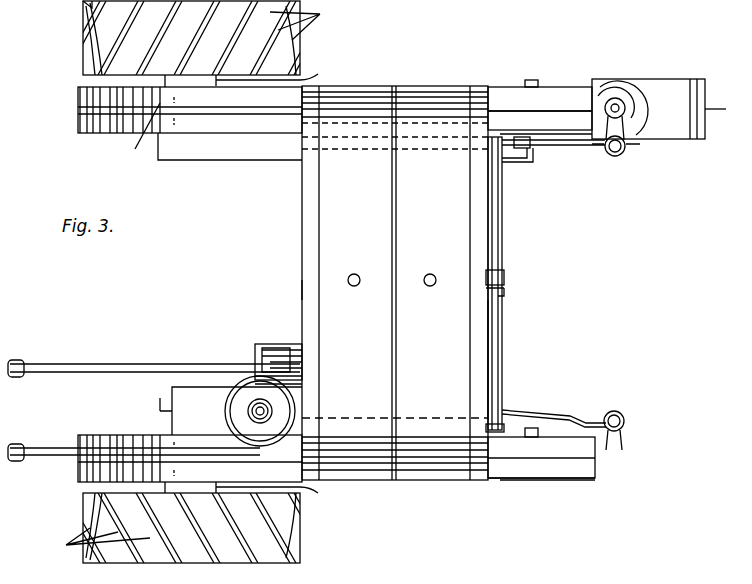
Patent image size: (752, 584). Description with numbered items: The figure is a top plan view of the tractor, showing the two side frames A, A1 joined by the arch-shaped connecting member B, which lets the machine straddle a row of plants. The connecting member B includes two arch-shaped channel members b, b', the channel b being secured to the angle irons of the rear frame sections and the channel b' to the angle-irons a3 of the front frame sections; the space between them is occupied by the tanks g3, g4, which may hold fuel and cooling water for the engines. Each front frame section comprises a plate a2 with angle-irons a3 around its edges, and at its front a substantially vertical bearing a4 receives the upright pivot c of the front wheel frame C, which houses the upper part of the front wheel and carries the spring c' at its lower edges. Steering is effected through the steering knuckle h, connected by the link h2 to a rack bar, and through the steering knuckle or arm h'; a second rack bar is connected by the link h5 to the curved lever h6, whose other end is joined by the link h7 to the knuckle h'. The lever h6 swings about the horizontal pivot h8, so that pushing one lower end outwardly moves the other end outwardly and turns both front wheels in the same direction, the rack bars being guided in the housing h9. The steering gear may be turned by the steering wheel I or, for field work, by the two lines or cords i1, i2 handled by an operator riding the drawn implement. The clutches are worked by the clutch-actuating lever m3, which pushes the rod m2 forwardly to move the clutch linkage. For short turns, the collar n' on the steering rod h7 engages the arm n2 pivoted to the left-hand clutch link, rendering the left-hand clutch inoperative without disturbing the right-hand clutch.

The arch-shaped connecting member B is at (382, 283).
The tank g3 is at (361, 249).
The tank g4 is at (433, 249).
The arch-shaped channel member b is at (287, 292).
The arch-shaped lever h6 is at (503, 240).
The pivot h8 is at (504, 276).
The arch-shaped channel member b' is at (509, 360).
The link h5 is at (498, 424).
The side frame A1 is at (505, 92).
The plate a2 is at (556, 108).
The front wheel frame C is at (648, 109).
The spring c' is at (723, 109).
The vertical bearing a4 is at (633, 98).
The upright pivot or shaft c is at (618, 79).
The steering knuckle or arm h' is at (636, 140).
The link h7 is at (587, 150).
The collar or projection n' is at (553, 158).
The arm n2 is at (520, 165).
The side frame A is at (490, 480).
The angle-irons a3 is at (517, 450).
The link h2 is at (541, 413).
The steering knuckle h is at (633, 422).
The steering line or cord i1 is at (44, 372).
The steering line or cord i2 is at (40, 450).
The guide housing h9 is at (245, 411).
The steering wheel I is at (244, 384).
The clutch-actuating lever m3 is at (290, 368).
The rod m2 is at (300, 383).